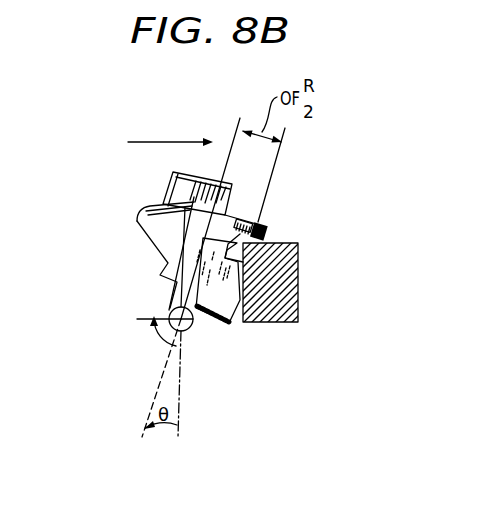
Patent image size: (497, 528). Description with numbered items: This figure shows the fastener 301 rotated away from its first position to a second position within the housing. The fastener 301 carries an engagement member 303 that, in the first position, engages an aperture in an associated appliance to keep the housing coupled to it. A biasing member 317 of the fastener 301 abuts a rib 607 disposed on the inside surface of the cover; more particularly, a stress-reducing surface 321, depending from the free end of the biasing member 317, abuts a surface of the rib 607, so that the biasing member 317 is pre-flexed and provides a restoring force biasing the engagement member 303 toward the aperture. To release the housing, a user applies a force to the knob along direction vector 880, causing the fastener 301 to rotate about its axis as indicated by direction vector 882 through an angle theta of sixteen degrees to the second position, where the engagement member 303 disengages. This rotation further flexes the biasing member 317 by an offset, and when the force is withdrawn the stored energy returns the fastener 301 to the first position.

The fastener 301 is at (131, 177).
The engagement member 303 is at (137, 221).
The biasing member 317 is at (263, 224).
The stress-reducing surface 321 is at (234, 300).
The rib 607 is at (299, 268).
The direction vector 880 is at (160, 142).
The direction vector 882 is at (169, 349).